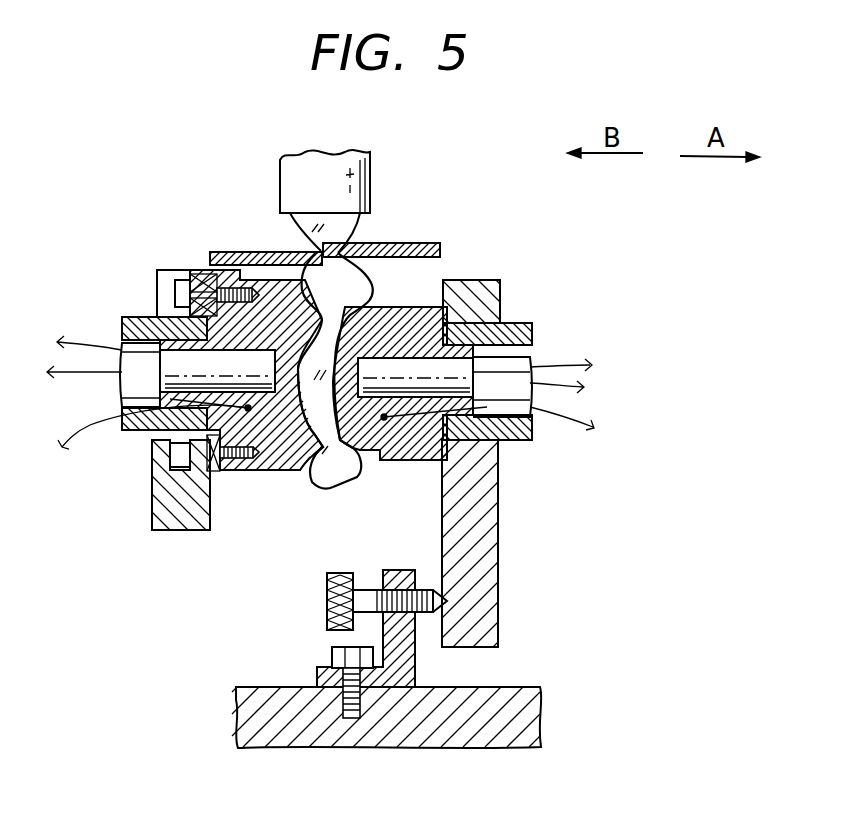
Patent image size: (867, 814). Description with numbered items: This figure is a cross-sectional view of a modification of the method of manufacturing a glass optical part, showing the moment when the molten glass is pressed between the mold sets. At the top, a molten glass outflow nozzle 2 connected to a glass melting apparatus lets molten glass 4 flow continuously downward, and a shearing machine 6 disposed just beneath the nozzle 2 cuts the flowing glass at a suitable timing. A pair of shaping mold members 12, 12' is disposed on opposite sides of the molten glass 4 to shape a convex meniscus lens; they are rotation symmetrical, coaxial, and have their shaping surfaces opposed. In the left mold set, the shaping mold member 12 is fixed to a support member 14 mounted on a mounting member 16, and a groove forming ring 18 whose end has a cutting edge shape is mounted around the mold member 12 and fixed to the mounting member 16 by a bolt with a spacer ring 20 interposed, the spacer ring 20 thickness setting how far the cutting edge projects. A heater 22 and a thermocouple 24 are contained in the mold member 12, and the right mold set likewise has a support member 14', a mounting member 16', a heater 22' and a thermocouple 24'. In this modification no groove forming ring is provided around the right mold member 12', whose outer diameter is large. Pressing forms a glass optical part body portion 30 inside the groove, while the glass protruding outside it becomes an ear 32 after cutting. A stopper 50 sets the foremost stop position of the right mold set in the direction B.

The molten glass outflow nozzle 2 is at (367, 176).
The molten glass 4 is at (300, 228).
The shearing machine 6 is at (243, 250).
The shaping mold member 12 is at (230, 349).
The shaping mold member 12' is at (412, 346).
The support member 14 is at (158, 348).
The support member 14' is at (495, 354).
The mounting member 16 is at (156, 485).
The mounting member 16' is at (501, 463).
The groove forming ring 18 is at (283, 456).
The spacer ring 20 is at (210, 472).
The heater 22 is at (161, 372).
The heater 22' is at (478, 376).
The thermocouple 24 is at (177, 442).
The thermocouple 24' is at (434, 455).
The glass optical part body portion 30 is at (378, 442).
The ear 32 is at (347, 489).
The stopper 50 is at (327, 590).